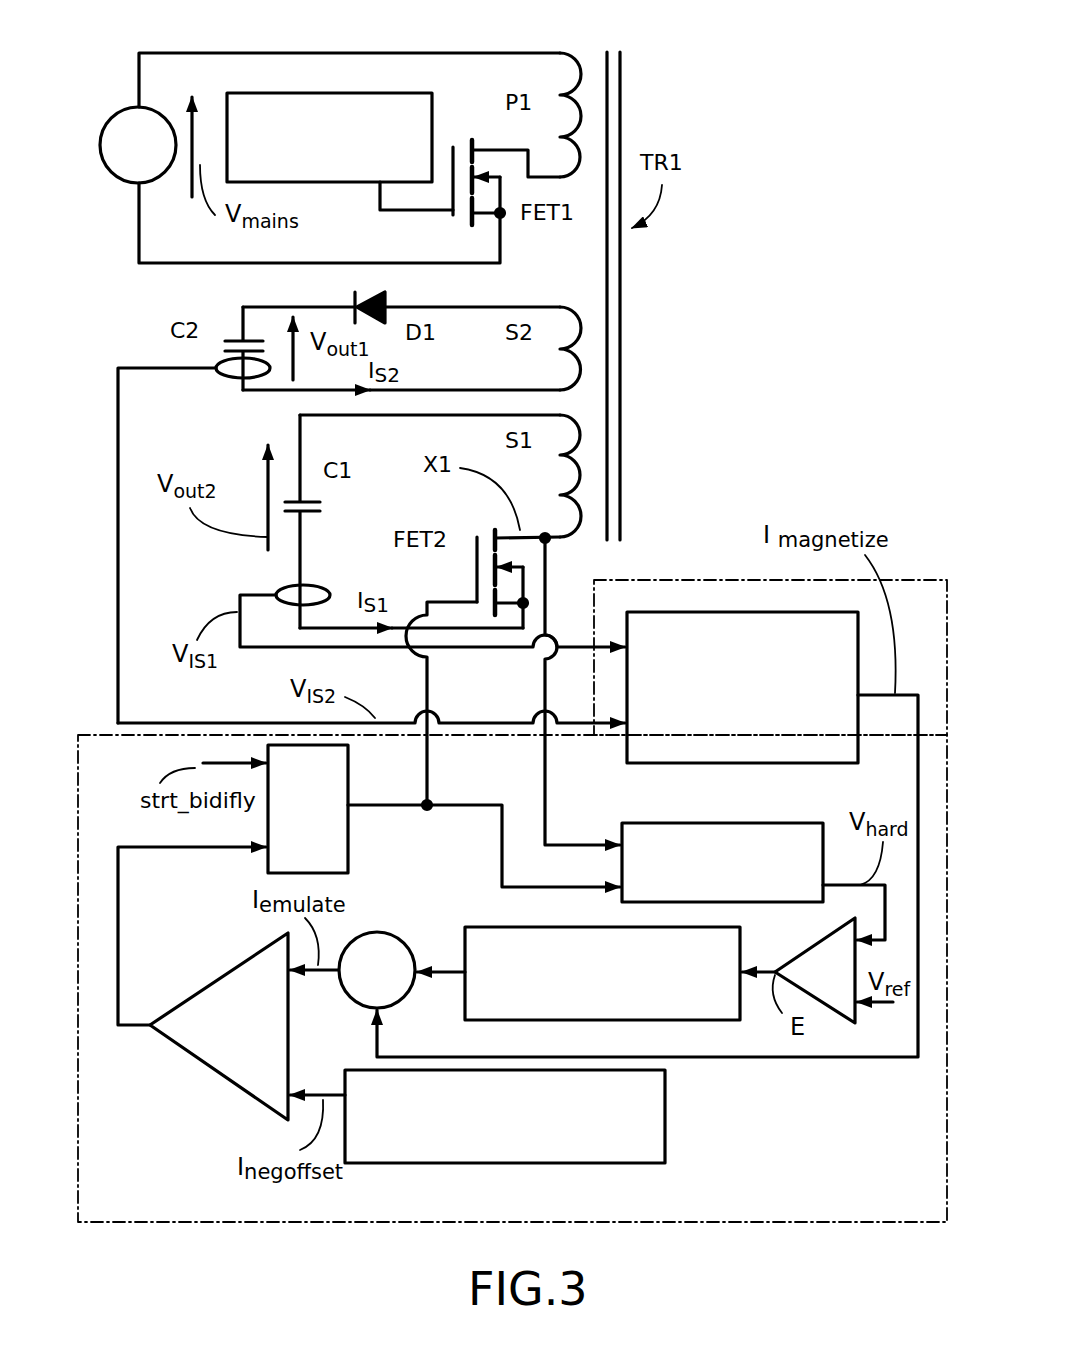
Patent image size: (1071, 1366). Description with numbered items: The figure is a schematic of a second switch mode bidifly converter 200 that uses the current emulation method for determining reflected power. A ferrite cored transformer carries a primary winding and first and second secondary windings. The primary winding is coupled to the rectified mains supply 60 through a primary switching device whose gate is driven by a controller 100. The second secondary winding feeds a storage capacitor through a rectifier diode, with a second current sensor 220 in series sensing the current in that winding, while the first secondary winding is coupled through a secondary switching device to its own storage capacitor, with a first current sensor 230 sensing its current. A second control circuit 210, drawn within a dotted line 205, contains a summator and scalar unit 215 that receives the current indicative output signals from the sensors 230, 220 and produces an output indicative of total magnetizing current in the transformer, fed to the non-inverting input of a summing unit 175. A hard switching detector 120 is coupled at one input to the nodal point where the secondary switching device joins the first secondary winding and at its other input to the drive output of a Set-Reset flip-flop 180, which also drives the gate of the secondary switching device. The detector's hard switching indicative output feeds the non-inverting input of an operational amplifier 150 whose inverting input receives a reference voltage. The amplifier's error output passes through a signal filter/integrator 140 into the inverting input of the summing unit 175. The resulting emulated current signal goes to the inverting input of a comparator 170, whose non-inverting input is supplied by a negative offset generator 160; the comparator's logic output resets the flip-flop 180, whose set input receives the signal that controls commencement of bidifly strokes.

The rectified mains supply 60 is at (133, 135).
The controller 100 is at (329, 137).
The second switch mode converter 200 is at (755, 232).
The second current sensor 220 is at (236, 380).
The first current sensor 230 is at (279, 593).
The second control circuit 210 is at (675, 584).
The summator and scalar unit 215 is at (742, 687).
The dotted line 205 is at (80, 1182).
The Set-Reset flip-flop 180 is at (280, 860).
The hard switching detector 120 is at (722, 862).
The signal filter/integrator 140 is at (602, 973).
The operational amplifier 150 is at (838, 1000).
The summing unit 175 is at (367, 958).
The comparator 170 is at (219, 1026).
The negative offset generator 160 is at (607, 1145).